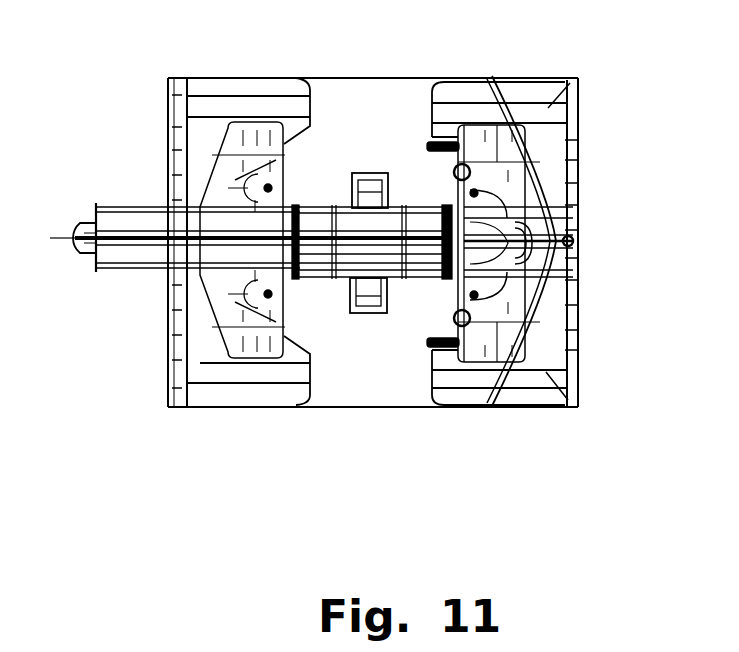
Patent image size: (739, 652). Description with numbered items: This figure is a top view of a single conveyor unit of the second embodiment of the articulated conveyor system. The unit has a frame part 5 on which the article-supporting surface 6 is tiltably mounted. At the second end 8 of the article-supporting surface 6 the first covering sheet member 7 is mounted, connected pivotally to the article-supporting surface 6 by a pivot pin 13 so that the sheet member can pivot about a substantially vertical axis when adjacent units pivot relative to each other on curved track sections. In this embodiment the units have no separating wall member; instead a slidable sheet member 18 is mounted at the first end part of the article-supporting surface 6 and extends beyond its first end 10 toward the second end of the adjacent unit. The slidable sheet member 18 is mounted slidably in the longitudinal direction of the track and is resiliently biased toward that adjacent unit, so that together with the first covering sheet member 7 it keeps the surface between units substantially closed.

The frame part 5 is at (130, 258).
The article-supporting surface 6 is at (388, 108).
The first covering sheet member 7 is at (542, 95).
The second end 8 is at (491, 78).
The first end 10 is at (188, 356).
The pivot pin 13 is at (530, 203).
The slidable sheet member 18 is at (222, 132).